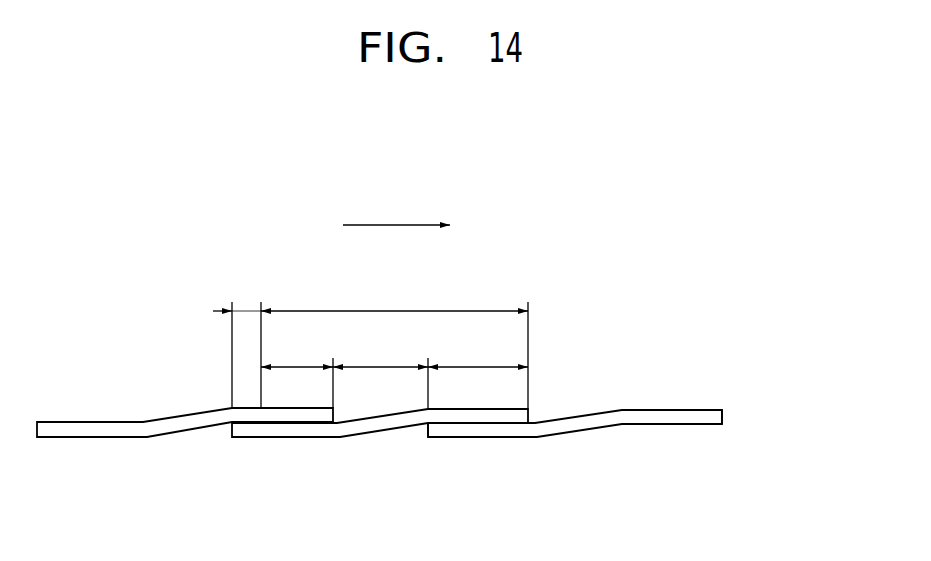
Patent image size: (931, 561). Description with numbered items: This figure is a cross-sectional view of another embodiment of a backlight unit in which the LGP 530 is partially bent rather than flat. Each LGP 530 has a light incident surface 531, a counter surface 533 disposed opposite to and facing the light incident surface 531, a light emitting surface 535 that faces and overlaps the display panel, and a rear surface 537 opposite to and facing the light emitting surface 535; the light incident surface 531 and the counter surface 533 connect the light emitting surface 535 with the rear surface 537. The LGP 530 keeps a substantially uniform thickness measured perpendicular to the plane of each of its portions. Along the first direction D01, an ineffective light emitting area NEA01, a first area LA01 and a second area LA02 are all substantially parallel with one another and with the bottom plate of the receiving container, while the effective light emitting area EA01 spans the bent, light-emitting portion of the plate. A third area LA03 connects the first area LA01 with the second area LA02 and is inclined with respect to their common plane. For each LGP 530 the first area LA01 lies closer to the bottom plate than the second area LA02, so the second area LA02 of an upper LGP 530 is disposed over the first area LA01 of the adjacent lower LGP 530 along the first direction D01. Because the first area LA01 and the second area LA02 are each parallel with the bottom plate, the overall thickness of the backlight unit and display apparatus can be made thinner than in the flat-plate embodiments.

The LGP 530 is at (808, 377).
The light incident surface 531 is at (427, 436).
The counter surface 533 is at (722, 417).
The light emitting surface 535 is at (699, 410).
The rear surface 537 is at (699, 424).
The first direction D01 is at (420, 227).
The ineffective light emitting area NEA01 is at (247, 293).
The effective light emitting area EA01 is at (394, 293).
The first area LA01 is at (297, 351).
The second area LA02 is at (478, 351).
The third area LA03 is at (380, 351).